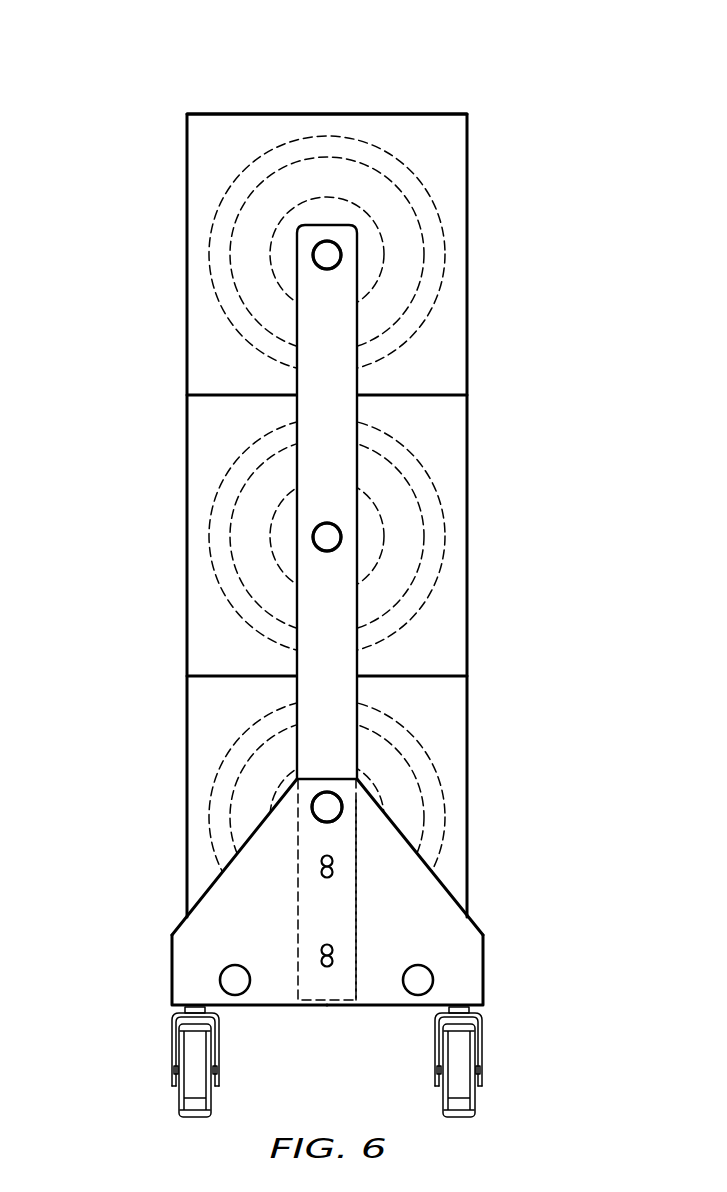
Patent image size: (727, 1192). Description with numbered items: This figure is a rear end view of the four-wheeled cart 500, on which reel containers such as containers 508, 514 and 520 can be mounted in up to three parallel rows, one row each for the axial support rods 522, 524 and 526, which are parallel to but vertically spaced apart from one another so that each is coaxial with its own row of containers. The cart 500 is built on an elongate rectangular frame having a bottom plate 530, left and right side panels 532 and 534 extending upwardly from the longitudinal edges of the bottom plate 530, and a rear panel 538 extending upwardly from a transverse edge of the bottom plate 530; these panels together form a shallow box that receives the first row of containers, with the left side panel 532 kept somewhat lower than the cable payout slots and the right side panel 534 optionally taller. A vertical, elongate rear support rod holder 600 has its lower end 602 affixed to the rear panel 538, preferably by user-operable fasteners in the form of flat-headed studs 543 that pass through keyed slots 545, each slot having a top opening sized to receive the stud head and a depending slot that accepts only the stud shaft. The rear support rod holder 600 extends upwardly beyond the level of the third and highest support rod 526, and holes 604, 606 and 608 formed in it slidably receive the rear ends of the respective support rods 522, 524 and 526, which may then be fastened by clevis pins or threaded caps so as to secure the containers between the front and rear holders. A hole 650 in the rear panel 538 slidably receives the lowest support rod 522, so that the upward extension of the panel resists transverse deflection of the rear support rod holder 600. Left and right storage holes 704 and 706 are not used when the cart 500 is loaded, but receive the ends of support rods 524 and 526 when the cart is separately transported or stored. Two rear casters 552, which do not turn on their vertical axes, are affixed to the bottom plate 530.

The cart 500 is at (270, 68).
The reel container 508 is at (467, 722).
The reel container 514 is at (467, 463).
The reel container 520 is at (467, 183).
The axial support rod 522 is at (328, 791).
The axial support rod 524 is at (329, 552).
The axial support rod 526 is at (329, 270).
The bottom plate 530 is at (327, 1000).
The left side panel 532 is at (172, 982).
The right side panel 534 is at (483, 968).
The rear panel 538 is at (190, 953).
The flat-headed stud 543 is at (331, 876).
The keyed slot 545 is at (321, 859).
The rear caster 552 is at (180, 1103).
The rear support rod holder 600 is at (328, 226).
The lower end 602 is at (357, 950).
The hole 604 is at (311, 808).
The hole 606 is at (312, 537).
The hole 608 is at (312, 256).
The hole 650 is at (343, 808).
The left storage hole 704 is at (240, 980).
The right storage hole 706 is at (416, 982).